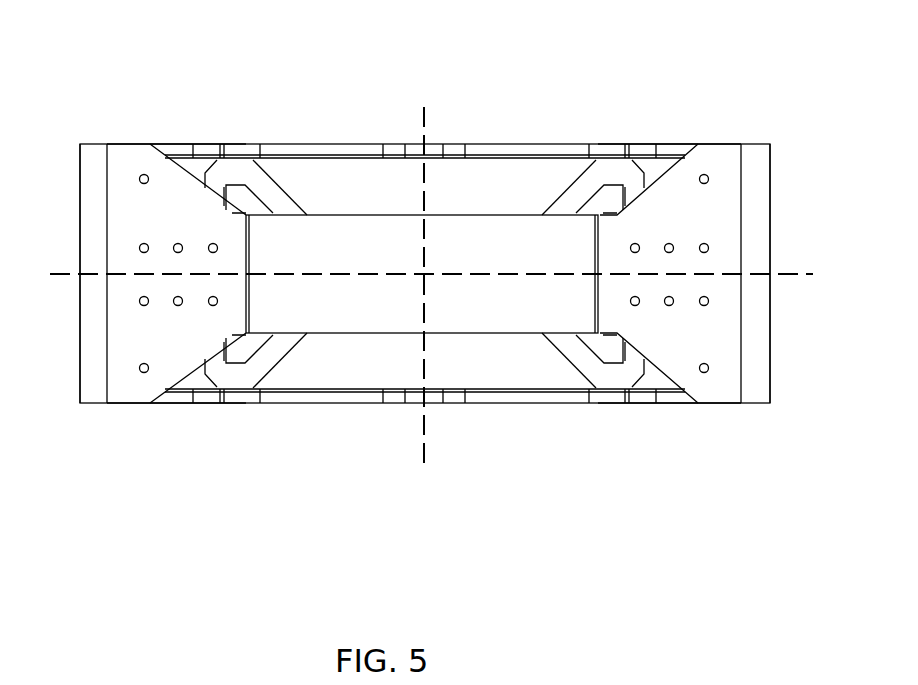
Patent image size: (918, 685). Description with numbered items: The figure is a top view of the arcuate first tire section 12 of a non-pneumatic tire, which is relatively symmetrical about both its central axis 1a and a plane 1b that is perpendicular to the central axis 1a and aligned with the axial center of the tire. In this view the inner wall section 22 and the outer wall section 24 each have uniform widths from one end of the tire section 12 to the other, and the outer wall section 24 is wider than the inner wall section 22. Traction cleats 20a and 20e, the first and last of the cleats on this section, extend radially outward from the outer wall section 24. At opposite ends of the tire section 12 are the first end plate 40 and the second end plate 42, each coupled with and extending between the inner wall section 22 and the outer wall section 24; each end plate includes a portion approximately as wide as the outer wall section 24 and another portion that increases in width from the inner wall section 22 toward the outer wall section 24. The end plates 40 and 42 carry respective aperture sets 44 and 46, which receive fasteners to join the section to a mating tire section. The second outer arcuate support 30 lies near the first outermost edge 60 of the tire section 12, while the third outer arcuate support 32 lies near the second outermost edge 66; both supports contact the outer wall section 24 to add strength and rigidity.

The first tire section 12 is at (190, 107).
The traction cleat 20a is at (85, 163).
The traction cleat 20e is at (757, 160).
The first end plate 40 is at (135, 213).
The second end plate 42 is at (757, 230).
The aperture set 44 is at (142, 373).
The aperture set 46 is at (703, 372).
The inner wall section 22 is at (515, 245).
The third outer arcuate support 32 is at (308, 156).
The second outer arcuate support 30 is at (522, 393).
The outer wall section 24 is at (352, 180).
The second outermost edge 66 is at (637, 145).
The first outermost edge 60 is at (412, 405).
The central axis 1a is at (427, 132).
The plane 1b is at (802, 276).